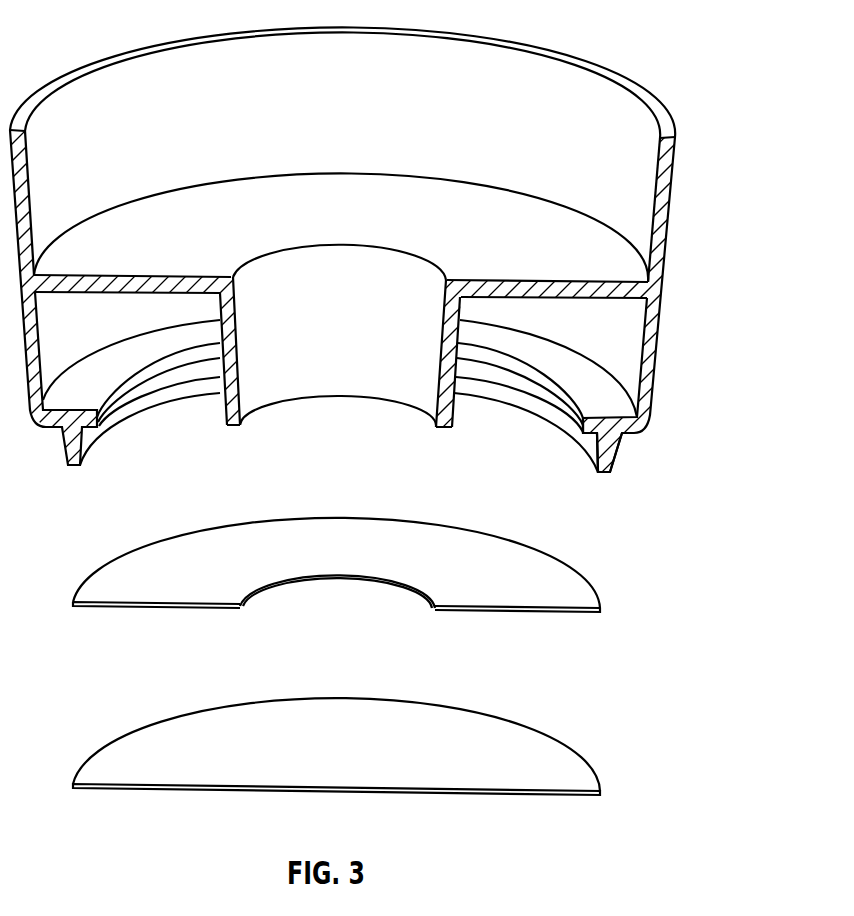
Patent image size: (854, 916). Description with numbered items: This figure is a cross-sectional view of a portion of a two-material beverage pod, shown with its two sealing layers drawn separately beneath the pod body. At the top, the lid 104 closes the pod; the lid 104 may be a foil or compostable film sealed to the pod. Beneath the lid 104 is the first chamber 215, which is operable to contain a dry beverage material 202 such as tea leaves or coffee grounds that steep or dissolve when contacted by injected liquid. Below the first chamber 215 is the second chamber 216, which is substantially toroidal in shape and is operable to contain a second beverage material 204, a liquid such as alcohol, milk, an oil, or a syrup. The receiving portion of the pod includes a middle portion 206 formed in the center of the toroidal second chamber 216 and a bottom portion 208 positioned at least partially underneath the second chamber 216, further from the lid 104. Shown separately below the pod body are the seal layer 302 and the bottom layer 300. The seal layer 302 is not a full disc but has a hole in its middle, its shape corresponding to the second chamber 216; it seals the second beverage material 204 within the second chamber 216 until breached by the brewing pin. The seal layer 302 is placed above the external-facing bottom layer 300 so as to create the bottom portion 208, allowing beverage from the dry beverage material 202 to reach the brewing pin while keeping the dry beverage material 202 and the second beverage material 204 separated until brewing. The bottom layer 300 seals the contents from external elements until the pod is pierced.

The lid 104 is at (128, 50).
The dry beverage material 202 is at (625, 170).
The second beverage material 204 is at (617, 358).
The middle portion 206 is at (363, 325).
The bottom portion 208 is at (592, 448).
The first chamber 215 is at (365, 221).
The second chamber 216 is at (613, 338).
The bottom layer 300 is at (125, 729).
The seal layer 302 is at (122, 548).